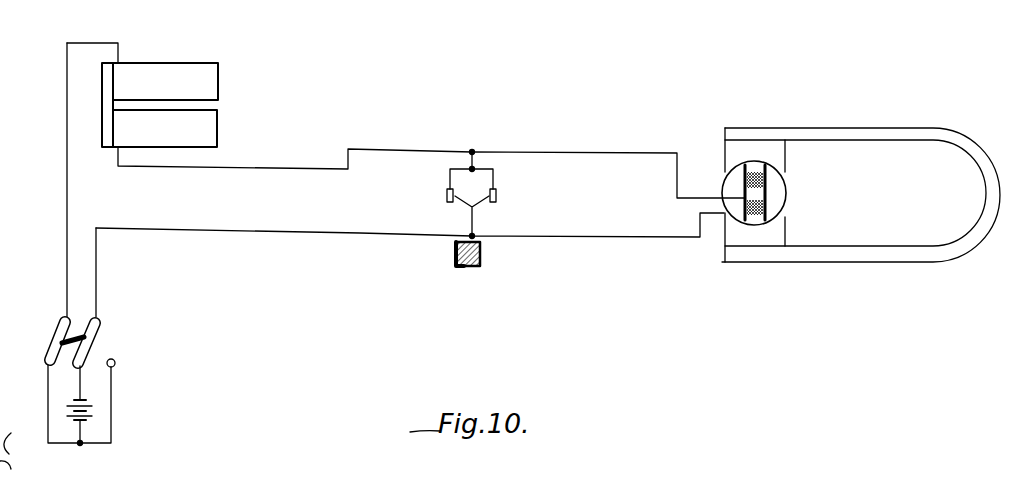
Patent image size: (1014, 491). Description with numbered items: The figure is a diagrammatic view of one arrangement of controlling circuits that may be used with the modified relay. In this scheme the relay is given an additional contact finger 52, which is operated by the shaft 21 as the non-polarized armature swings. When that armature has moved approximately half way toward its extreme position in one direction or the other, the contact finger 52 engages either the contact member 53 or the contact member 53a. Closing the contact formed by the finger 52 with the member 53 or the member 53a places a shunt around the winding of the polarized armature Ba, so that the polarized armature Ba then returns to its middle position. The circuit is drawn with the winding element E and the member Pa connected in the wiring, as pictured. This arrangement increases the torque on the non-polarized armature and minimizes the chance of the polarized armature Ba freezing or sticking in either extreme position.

The electromagnet E is at (171, 53).
The contact member 53 is at (449, 180).
The contact member 53a is at (501, 178).
The contact finger 52 is at (470, 222).
The shaft 21 is at (478, 268).
The tube Pa is at (835, 115).
The polarized armature Ba is at (786, 186).